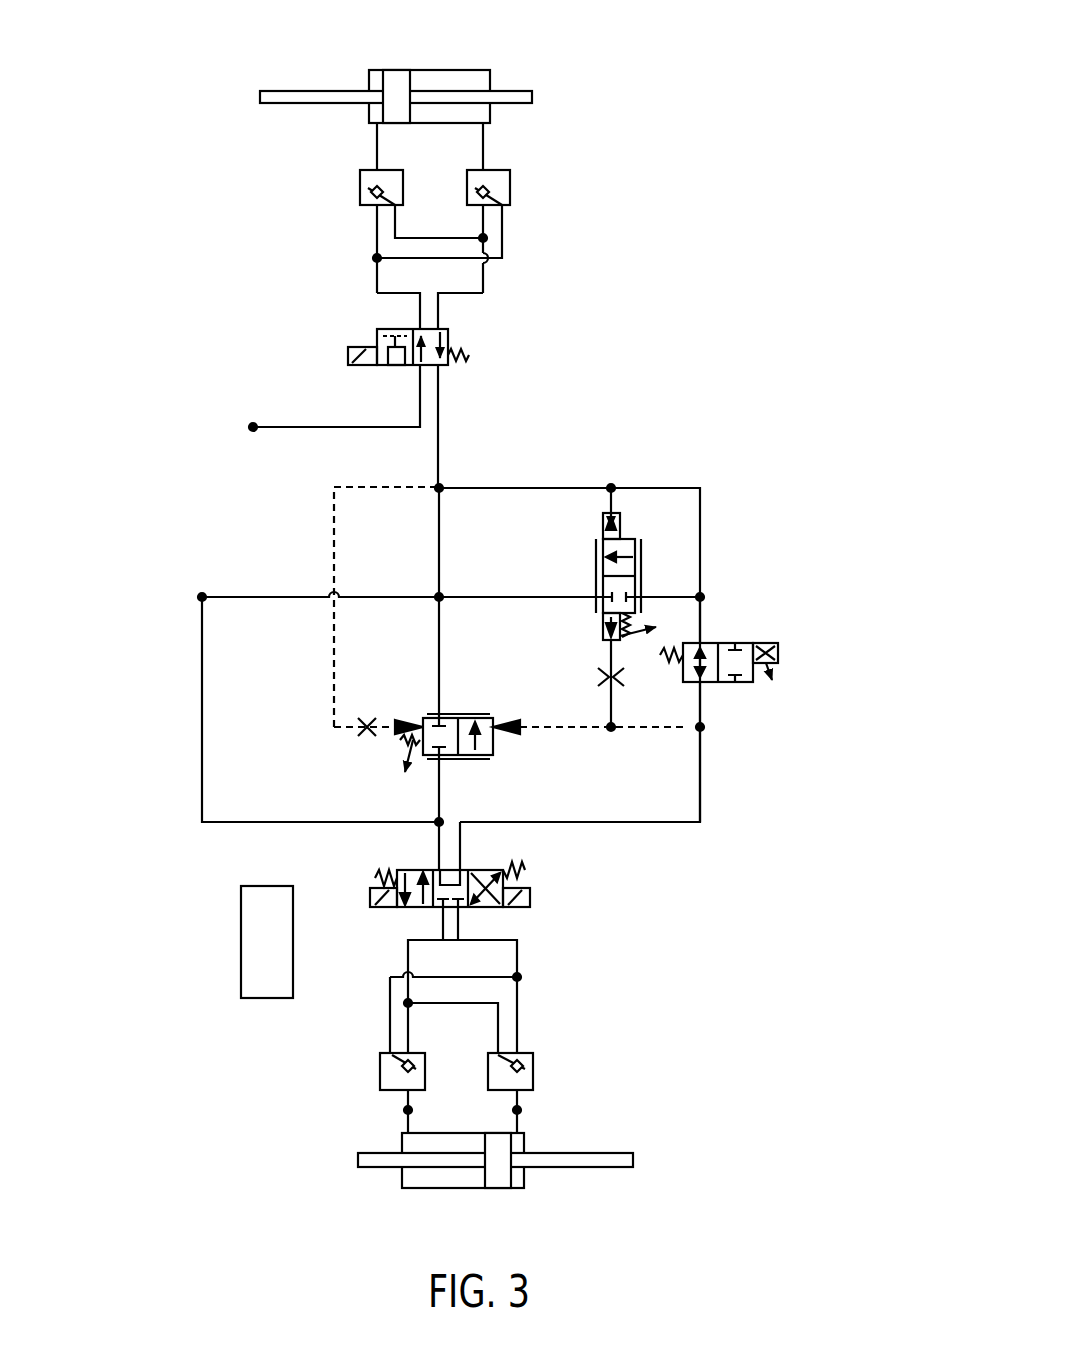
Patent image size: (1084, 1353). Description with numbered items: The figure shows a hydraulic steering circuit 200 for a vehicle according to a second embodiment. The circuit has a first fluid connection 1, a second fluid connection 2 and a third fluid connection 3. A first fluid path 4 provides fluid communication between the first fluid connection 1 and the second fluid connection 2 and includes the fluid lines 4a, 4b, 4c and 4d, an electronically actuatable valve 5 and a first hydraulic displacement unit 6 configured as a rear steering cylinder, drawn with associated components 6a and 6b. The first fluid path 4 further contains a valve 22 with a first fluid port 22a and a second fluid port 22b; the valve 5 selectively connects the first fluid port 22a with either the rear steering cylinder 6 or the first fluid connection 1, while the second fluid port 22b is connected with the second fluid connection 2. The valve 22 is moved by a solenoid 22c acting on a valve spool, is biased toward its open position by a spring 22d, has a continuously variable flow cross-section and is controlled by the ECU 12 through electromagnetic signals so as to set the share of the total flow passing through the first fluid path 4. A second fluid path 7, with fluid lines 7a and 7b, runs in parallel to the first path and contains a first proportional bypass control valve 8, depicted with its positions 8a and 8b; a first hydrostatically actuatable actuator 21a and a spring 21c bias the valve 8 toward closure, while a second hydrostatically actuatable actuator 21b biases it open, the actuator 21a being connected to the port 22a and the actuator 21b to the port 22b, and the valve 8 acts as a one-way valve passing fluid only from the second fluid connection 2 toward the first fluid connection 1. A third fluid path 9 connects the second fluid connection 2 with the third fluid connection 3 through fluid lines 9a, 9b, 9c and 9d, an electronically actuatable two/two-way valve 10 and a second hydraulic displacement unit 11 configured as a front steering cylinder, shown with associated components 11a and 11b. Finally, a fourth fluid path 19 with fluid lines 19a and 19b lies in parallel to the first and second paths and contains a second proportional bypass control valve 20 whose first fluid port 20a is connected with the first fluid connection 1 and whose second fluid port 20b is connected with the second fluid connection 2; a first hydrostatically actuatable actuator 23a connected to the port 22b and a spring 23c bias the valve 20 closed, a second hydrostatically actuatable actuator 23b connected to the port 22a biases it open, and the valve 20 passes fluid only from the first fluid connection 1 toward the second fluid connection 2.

The first fluid connection 1 is at (202, 595).
The second fluid connection 2 is at (440, 480).
The third fluid connection 3 is at (253, 425).
The first fluid path 4 is at (632, 893).
The fluid line 4a is at (437, 845).
The fluid line 4b is at (462, 845).
The fluid line 4c is at (408, 960).
The fluid line 4d is at (517, 960).
The electronically actuatable valve 5 is at (385, 920).
The first hydraulic displacement unit 6 is at (522, 1200).
The check valve 6a is at (402, 1133).
The check valve 6b is at (524, 1133).
The second fluid path 7 is at (505, 578).
The fluid line 7a is at (394, 596).
The fluid line 7b is at (672, 595).
The first proportional bypass control valve 8 is at (578, 578).
The valve pilot connection 8a is at (598, 616).
The valve position 8b is at (640, 578).
The third fluid path 9 is at (550, 290).
The fluid line 9a is at (436, 462).
The fluid line 9b is at (320, 427).
The fluid line 9c is at (443, 326).
The fluid line 9d is at (415, 326).
The electronically actuatable 2/2-way valve 10 is at (490, 366).
The second hydraulic displacement unit 11 is at (508, 58).
The check valve 11a is at (483, 125).
The check valve 11b is at (377, 125).
The ECU 12 is at (265, 1000).
The fourth fluid path 19 is at (395, 678).
The fluid line 19a is at (442, 785).
The fluid line 19b is at (441, 618).
The second proportional bypass control valve 20 is at (487, 706).
The first fluid port 20a is at (426, 758).
The second fluid port 20b is at (437, 712).
The first hydrostatically actuatable actuator 21a is at (620, 646).
The second hydrostatically actuatable actuator 21b is at (614, 510).
The spring 21c is at (643, 636).
The valve 22 is at (772, 598).
The first fluid port 22a is at (705, 690).
The second fluid port 22b is at (716, 593).
The solenoid 22c is at (779, 653).
The spring 22d is at (671, 672).
The first hydrostatically actuatable actuator 23a is at (393, 744).
The second hydrostatically actuatable actuator 23b is at (520, 736).
The spring 23c is at (393, 760).
The hydraulic steering circuit 200 is at (690, 176).